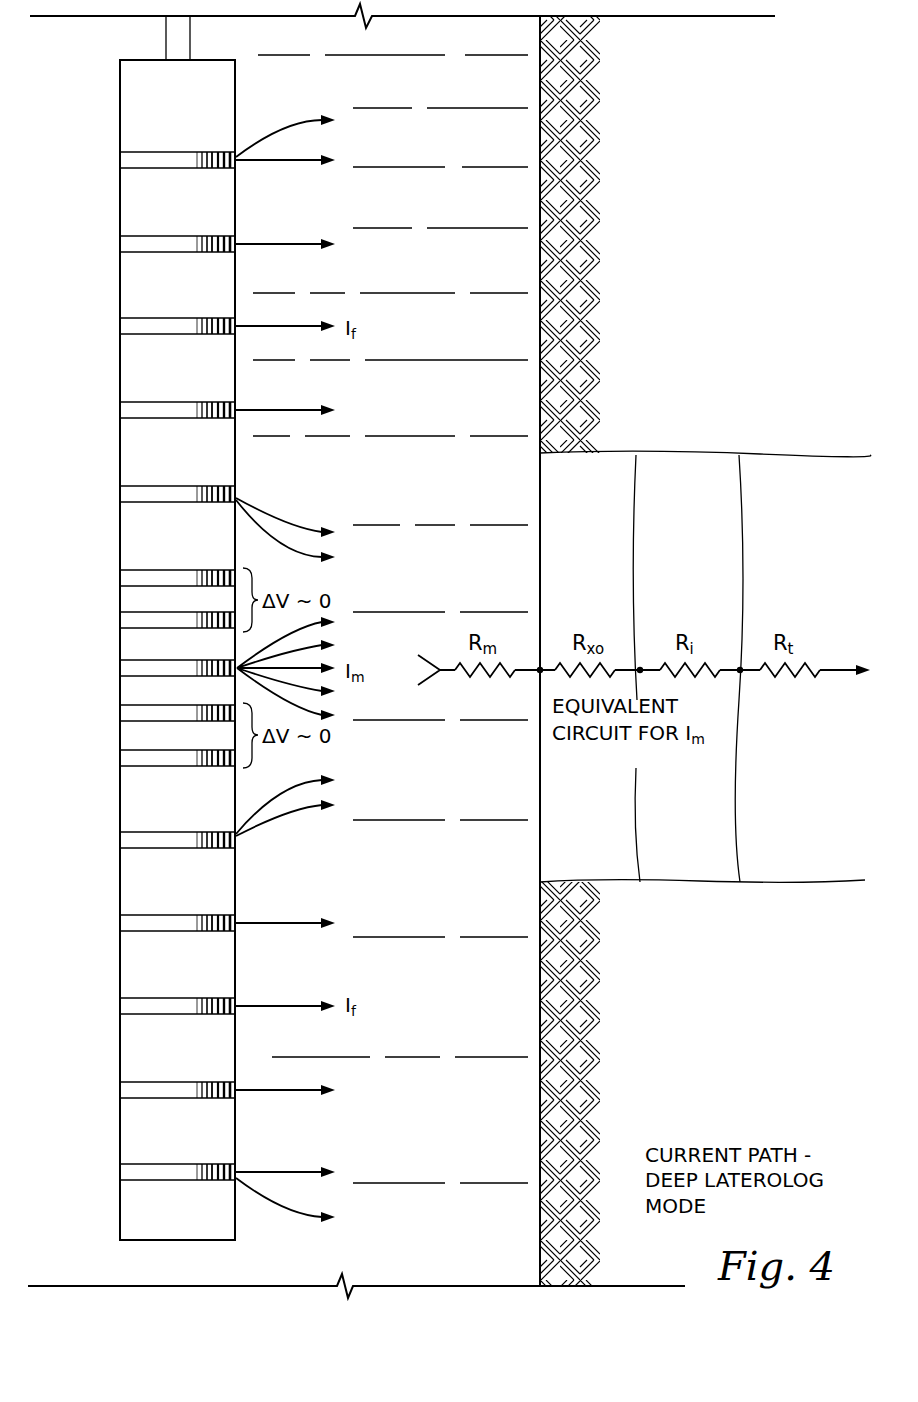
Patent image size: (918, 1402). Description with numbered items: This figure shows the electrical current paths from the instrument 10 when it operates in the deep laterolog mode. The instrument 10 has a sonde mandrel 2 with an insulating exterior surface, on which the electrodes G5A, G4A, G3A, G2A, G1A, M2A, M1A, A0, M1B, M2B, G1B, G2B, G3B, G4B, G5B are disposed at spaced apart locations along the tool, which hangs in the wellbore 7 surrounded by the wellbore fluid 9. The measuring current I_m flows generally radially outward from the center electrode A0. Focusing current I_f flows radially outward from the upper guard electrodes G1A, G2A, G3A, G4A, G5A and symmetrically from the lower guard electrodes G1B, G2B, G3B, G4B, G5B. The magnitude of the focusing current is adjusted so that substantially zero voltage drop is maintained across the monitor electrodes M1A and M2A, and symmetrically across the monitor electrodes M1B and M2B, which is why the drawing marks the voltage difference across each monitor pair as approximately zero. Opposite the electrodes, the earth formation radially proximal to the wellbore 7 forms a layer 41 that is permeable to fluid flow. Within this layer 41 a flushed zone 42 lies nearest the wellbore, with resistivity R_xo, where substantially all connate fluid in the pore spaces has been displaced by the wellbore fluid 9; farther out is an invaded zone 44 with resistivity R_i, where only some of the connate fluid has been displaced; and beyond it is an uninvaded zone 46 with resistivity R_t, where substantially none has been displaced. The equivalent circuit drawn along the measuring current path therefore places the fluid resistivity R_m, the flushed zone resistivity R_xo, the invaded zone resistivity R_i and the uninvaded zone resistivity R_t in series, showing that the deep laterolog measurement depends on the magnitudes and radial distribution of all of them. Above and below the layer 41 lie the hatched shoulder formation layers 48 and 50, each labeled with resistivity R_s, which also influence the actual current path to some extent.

The sonde mandrel 2 is at (120, 76).
The instrument 10 is at (181, 628).
The wellbore 7 is at (516, 137).
The fluid 9 is at (446, 888).
The layer 41 is at (540, 490).
The flushed zone 42 is at (597, 562).
The invaded zone 44 is at (704, 562).
The uninvaded zone 46 is at (805, 562).
The upper shoulder bed 48 is at (786, 343).
The lower shoulder bed 50 is at (786, 998).
The guard electrode G5A is at (120, 160).
The guard electrode G4A is at (120, 244).
The guard electrode G3A is at (120, 326).
The guard electrode G2A is at (120, 410).
The guard electrode G1A is at (120, 494).
The monitor electrode M2A is at (120, 578).
The monitor electrode M1A is at (120, 620).
The center electrode A0 is at (120, 668).
The monitor electrode M1B is at (120, 713).
The monitor electrode M2B is at (120, 758).
The guard electrode G1B is at (120, 840).
The guard electrode G2B is at (120, 923).
The guard electrode G3B is at (120, 1006).
The guard electrode G4B is at (120, 1090).
The guard electrode G5B is at (120, 1172).